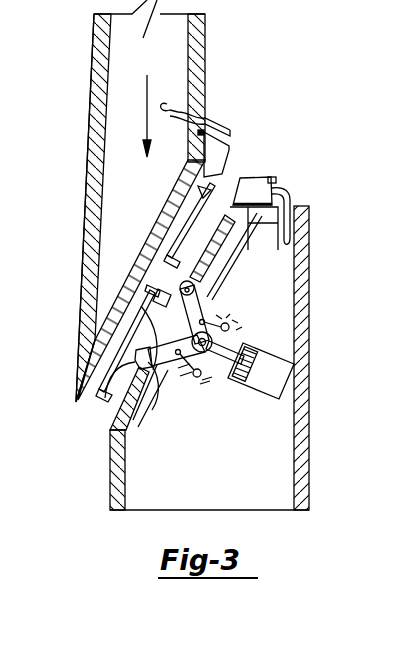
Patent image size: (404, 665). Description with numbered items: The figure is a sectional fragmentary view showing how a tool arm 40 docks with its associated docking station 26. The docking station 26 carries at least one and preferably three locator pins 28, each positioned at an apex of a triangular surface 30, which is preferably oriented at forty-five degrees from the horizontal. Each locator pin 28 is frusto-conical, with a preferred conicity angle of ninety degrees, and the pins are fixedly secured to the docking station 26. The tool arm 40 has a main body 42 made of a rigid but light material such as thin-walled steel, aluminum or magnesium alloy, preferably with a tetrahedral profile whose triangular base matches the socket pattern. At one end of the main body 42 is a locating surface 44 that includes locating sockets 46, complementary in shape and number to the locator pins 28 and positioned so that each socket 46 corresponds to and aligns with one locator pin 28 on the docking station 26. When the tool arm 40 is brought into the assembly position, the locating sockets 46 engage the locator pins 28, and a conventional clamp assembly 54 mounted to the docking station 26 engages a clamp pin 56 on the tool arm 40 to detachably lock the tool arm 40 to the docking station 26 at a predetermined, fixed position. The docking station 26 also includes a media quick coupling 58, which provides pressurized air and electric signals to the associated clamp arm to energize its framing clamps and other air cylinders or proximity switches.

The docking station 26 is at (310, 240).
The locator pin 28 is at (223, 218).
The triangular surface 30 is at (107, 432).
The tool arm 40 is at (86, 118).
The main body 42 is at (83, 202).
The locating surface 44 is at (160, 387).
The locating socket 46 is at (136, 433).
The clamp assembly 54 is at (268, 370).
The clamp pin 56 is at (155, 275).
The media quick coupling 58 is at (259, 190).